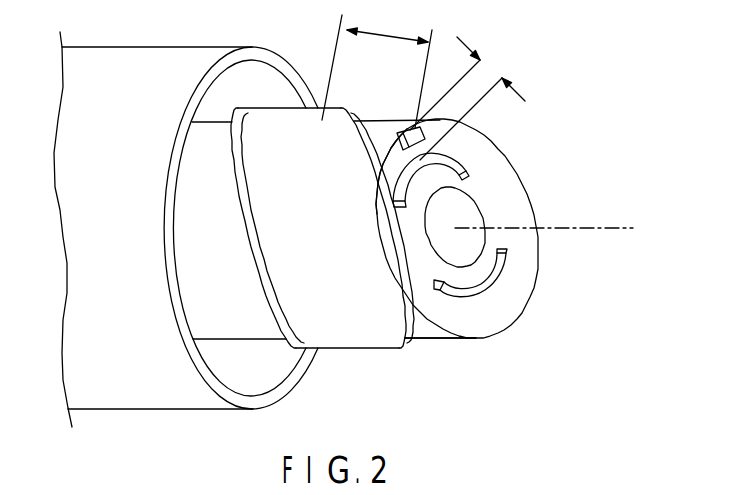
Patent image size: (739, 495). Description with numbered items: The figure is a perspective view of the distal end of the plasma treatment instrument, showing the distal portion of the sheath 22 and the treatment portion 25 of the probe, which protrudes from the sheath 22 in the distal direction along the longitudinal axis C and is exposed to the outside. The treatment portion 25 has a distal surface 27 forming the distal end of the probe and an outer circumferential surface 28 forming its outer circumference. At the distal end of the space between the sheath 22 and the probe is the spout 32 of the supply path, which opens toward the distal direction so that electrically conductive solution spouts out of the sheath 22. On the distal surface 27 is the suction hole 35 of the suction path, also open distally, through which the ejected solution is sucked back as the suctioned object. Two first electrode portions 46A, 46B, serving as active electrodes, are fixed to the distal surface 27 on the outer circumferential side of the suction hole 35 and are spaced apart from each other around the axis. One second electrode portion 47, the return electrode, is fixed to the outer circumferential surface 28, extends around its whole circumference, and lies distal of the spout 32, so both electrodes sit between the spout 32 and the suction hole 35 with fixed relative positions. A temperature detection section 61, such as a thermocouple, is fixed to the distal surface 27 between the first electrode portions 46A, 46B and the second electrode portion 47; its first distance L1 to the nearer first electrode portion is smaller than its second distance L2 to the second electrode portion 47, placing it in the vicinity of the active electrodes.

The sheath 22 is at (120, 374).
The spout 32 is at (263, 73).
The second electrode portion 47 is at (345, 336).
The outer circumferential surface 28 is at (373, 128).
The treatment portion 25 is at (417, 318).
The distal surface 27 is at (497, 204).
The suction hole 35 is at (458, 208).
The first electrode portion 46A is at (464, 158).
The first electrode portion 46B is at (505, 272).
The temperature detection section 61 is at (398, 137).
The longitudinal axis C is at (606, 227).
The first distance L1 is at (467, 98).
The second distance L2 is at (377, 68).